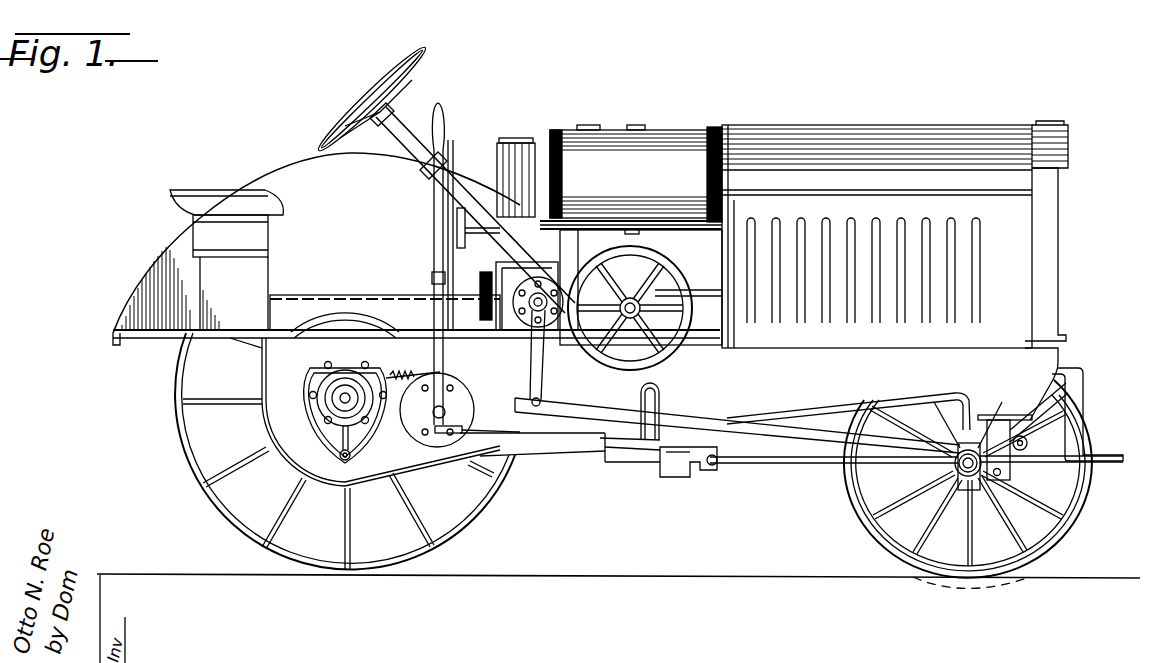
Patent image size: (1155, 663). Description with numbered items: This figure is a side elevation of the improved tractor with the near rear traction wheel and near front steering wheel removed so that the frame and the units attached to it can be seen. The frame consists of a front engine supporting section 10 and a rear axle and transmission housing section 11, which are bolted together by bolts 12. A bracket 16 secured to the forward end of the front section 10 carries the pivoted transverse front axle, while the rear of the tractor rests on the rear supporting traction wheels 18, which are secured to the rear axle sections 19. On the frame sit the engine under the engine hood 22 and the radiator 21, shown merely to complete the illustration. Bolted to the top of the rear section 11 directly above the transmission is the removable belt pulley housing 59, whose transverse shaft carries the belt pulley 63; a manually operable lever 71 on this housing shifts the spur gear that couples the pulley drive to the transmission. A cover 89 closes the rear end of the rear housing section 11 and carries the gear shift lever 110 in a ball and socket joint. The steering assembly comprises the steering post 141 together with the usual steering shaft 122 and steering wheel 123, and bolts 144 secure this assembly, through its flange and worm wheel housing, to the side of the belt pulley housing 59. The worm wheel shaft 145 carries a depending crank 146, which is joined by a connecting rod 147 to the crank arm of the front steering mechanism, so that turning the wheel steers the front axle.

The front engine supporting section 10 is at (790, 398).
The rear axle and transmission housing section 11 is at (497, 475).
The bolts 12 is at (623, 455).
The bracket 16 is at (1000, 455).
The rear supporting traction wheels 18 is at (470, 515).
The rear axle sections 19 is at (300, 406).
The radiator 21 is at (1068, 142).
The engine hood 22 is at (952, 148).
The belt pulley housing 59 is at (507, 312).
The belt pulley 63 is at (690, 275).
The manually operable lever 71 is at (500, 140).
The cover 89 is at (397, 305).
The gear shift lever 110 is at (453, 137).
The steering column 122 is at (410, 115).
The steering wheel 123 is at (400, 75).
The steering post 141 is at (468, 185).
The bolts 144 is at (486, 300).
The worm wheel shaft 145 is at (532, 330).
The depending crank 146 is at (544, 368).
The connecting rod 147 is at (690, 422).